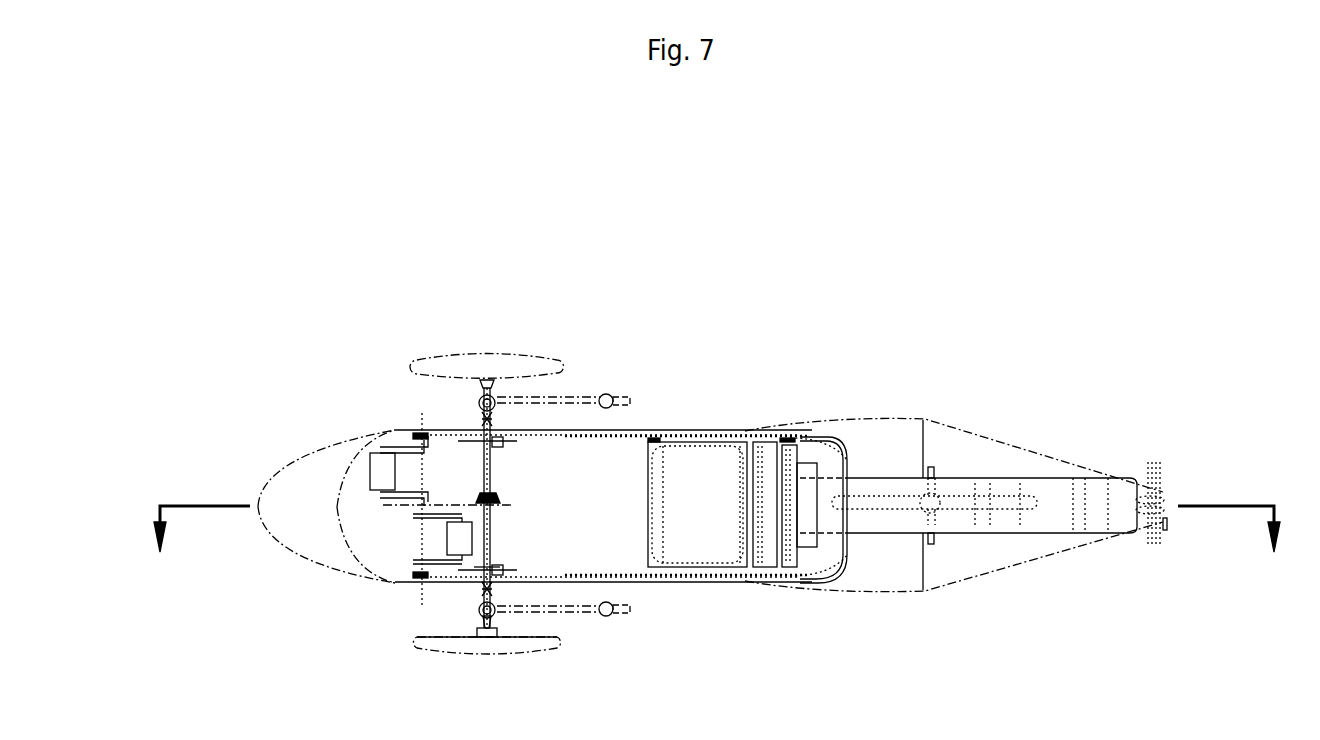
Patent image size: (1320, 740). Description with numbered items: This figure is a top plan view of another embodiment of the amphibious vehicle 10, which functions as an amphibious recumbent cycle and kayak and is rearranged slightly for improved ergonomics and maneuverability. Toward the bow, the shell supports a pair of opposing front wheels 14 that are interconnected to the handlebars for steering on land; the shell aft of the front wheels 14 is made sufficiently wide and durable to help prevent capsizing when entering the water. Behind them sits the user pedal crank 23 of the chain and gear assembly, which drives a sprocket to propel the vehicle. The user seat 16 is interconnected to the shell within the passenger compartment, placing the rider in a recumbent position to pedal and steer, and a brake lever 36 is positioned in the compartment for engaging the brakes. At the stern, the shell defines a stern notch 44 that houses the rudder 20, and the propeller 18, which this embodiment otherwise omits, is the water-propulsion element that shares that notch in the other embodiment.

The amphibious vehicle 10 is at (290, 450).
The front wheels 14 is at (465, 666).
The user seat 16 is at (705, 480).
The propeller 18 is at (598, 630).
The rudder 20 is at (1168, 485).
The user pedal crank 23 is at (405, 436).
The brake lever 36 is at (473, 585).
The stern notch 44 is at (1173, 494).